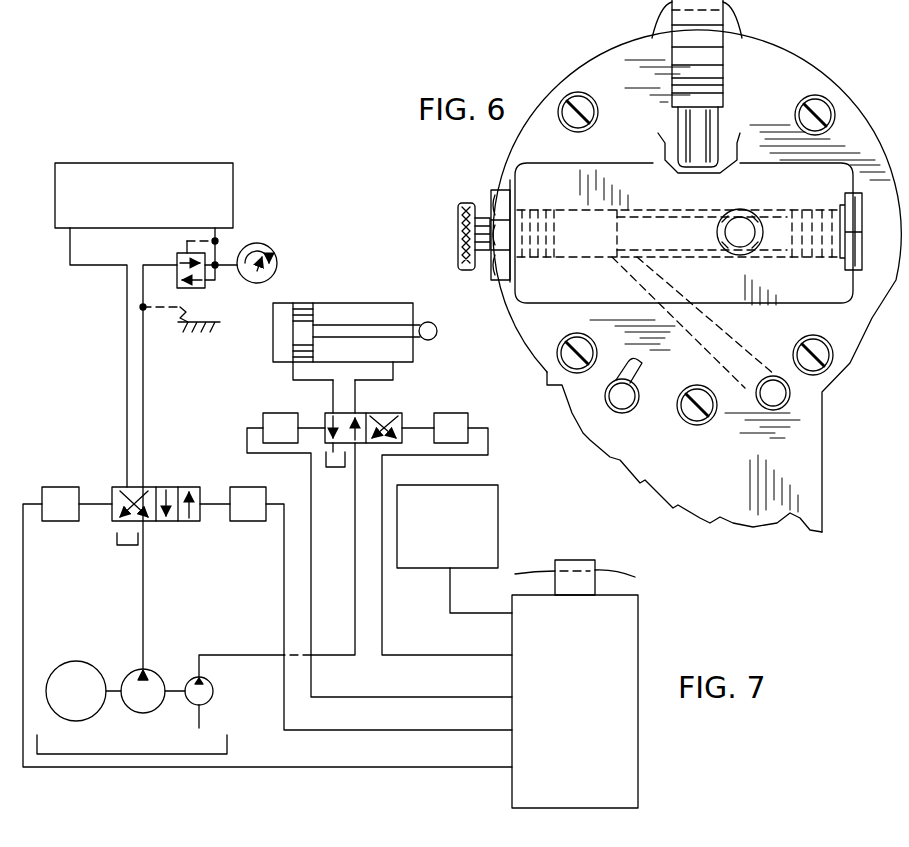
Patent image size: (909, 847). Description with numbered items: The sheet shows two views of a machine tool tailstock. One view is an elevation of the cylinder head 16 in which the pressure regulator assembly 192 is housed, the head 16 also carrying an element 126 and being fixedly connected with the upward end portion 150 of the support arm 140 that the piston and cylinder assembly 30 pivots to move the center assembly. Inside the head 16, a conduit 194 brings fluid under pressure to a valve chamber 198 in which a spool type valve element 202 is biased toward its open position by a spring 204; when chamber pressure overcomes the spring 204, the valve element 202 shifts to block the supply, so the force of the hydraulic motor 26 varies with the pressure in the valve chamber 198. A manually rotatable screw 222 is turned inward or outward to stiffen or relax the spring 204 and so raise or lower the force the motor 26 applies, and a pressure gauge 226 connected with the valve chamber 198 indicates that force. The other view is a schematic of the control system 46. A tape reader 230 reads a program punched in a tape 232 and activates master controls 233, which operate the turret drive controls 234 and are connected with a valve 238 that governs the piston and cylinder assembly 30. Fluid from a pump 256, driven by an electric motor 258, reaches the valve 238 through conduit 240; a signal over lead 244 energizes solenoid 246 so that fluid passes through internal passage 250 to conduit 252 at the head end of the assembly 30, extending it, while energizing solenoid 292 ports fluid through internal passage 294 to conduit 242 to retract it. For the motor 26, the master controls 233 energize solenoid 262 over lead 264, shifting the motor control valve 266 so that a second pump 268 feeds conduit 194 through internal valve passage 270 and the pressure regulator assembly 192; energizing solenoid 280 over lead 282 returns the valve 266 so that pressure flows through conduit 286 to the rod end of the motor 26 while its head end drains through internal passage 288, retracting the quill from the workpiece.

In FIG. 6, the head 16 is at (556, 78).
In FIG. 7, the hydraulic motor 26 is at (150, 171).
In FIG. 7, the piston and cylinder assembly 30 is at (356, 300).
In FIG. 7, the control system 46 is at (642, 642).
In FIG. 6, the mounting plate 126 is at (836, 175).
In FIG. 6, the support arm 140 is at (834, 480).
In FIG. 6, the upward end portion 150 is at (815, 440).
In FIG. 6, the pressure regulator assembly 192 is at (446, 208).
In FIG. 7, the pressure regulator assembly 192 is at (232, 242).
In FIG. 6, the conduit 194 is at (750, 212).
In FIG. 7, the conduit 194 is at (143, 382).
In FIG. 6, the valve chamber 198 is at (680, 195).
In FIG. 7, the spool type valve element 202 is at (205, 286).
In FIG. 7, the spring 204 is at (192, 332).
In FIG. 6, the manually rotatable screw 222 is at (470, 203).
In FIG. 6, the pressure gauge 226 is at (723, 47).
In FIG. 7, the pressure gauge 226 is at (274, 256).
In FIG. 7, the tape reader 230 is at (565, 562).
In FIG. 7, the tape 232 is at (530, 573).
In FIG. 7, the master controls 233 is at (636, 770).
In FIG. 7, the turret drive controls 234 is at (498, 522).
In FIG. 7, the valve 238 is at (378, 412).
In FIG. 7, the conduit 240 is at (355, 520).
In FIG. 7, the conduit 242 is at (393, 369).
In FIG. 7, the lead 244 is at (311, 588).
In FIG. 7, the solenoid 246 is at (282, 413).
In FIG. 7, the passage 250 is at (437, 416).
In FIG. 7, the conduit 252 is at (293, 372).
In FIG. 7, the pump 256 is at (213, 691).
In FIG. 7, the electric motor 258 is at (82, 662).
In FIG. 7, the solenoid 262 is at (78, 487).
In FIG. 7, the lead 264 is at (23, 572).
In FIG. 7, the motor control valve 266 is at (156, 479).
In FIG. 7, the second pump 268 is at (148, 668).
In FIG. 7, the internal valve passage 270 is at (190, 521).
In FIG. 7, the solenoid 280 is at (250, 487).
In FIG. 7, the lead 282 is at (284, 642).
In FIG. 7, the conduit 286 is at (126, 358).
In FIG. 7, the internal passage 288 is at (117, 517).
In FIG. 7, the solenoid 292 is at (470, 420).
In FIG. 7, the internal passage 294 is at (352, 422).